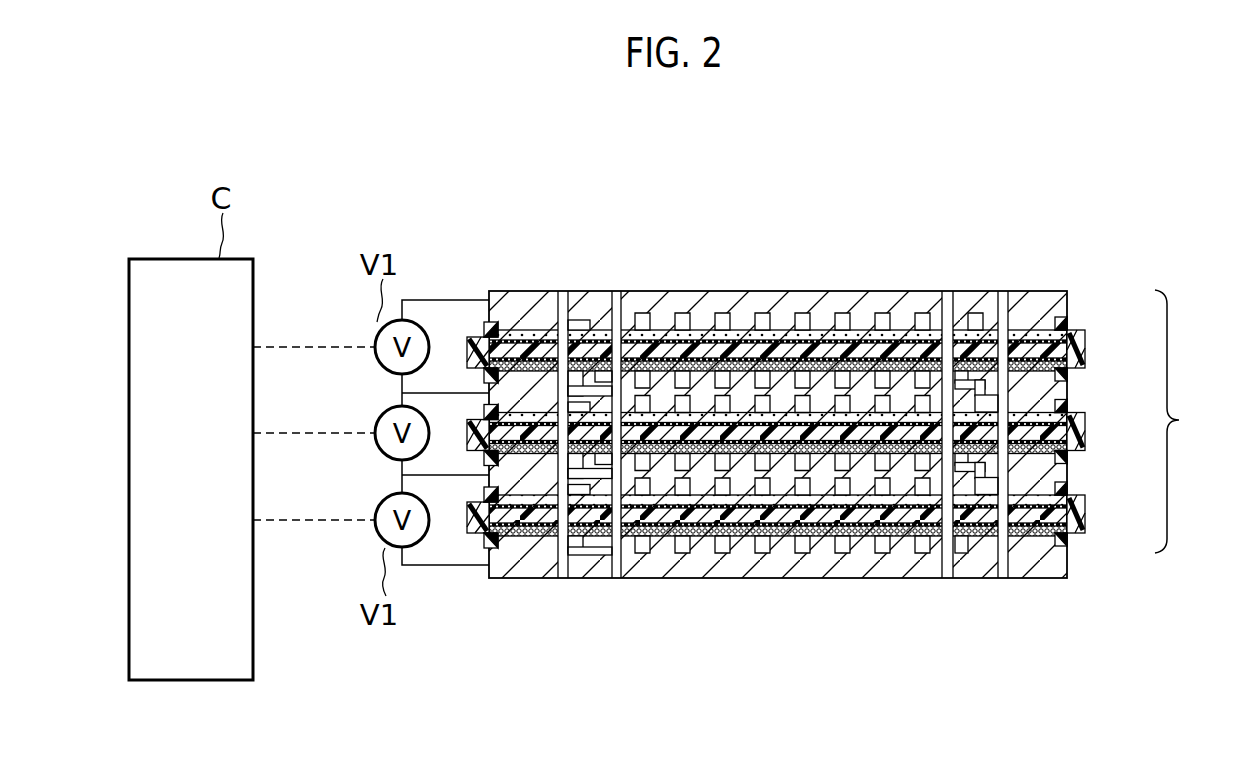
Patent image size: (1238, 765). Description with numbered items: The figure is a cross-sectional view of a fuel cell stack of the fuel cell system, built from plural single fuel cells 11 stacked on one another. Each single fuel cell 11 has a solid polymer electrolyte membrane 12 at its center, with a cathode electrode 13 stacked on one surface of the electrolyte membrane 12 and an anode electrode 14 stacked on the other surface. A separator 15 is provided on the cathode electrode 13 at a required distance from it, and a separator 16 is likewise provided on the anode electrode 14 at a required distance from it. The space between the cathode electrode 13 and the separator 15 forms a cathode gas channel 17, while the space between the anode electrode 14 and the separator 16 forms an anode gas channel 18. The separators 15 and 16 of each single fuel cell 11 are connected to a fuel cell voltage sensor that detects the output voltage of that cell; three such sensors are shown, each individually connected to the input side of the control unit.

The single fuel cell 11 is at (851, 434).
The solid polymer electrolyte membrane 12 is at (1085, 435).
The cathode electrode 13 is at (983, 423).
The anode electrode 14 is at (985, 450).
The separator 15 is at (1083, 357).
The separator 16 is at (1052, 476).
The cathode gas channel 17 is at (927, 397).
The anode gas channel 18 is at (920, 457).